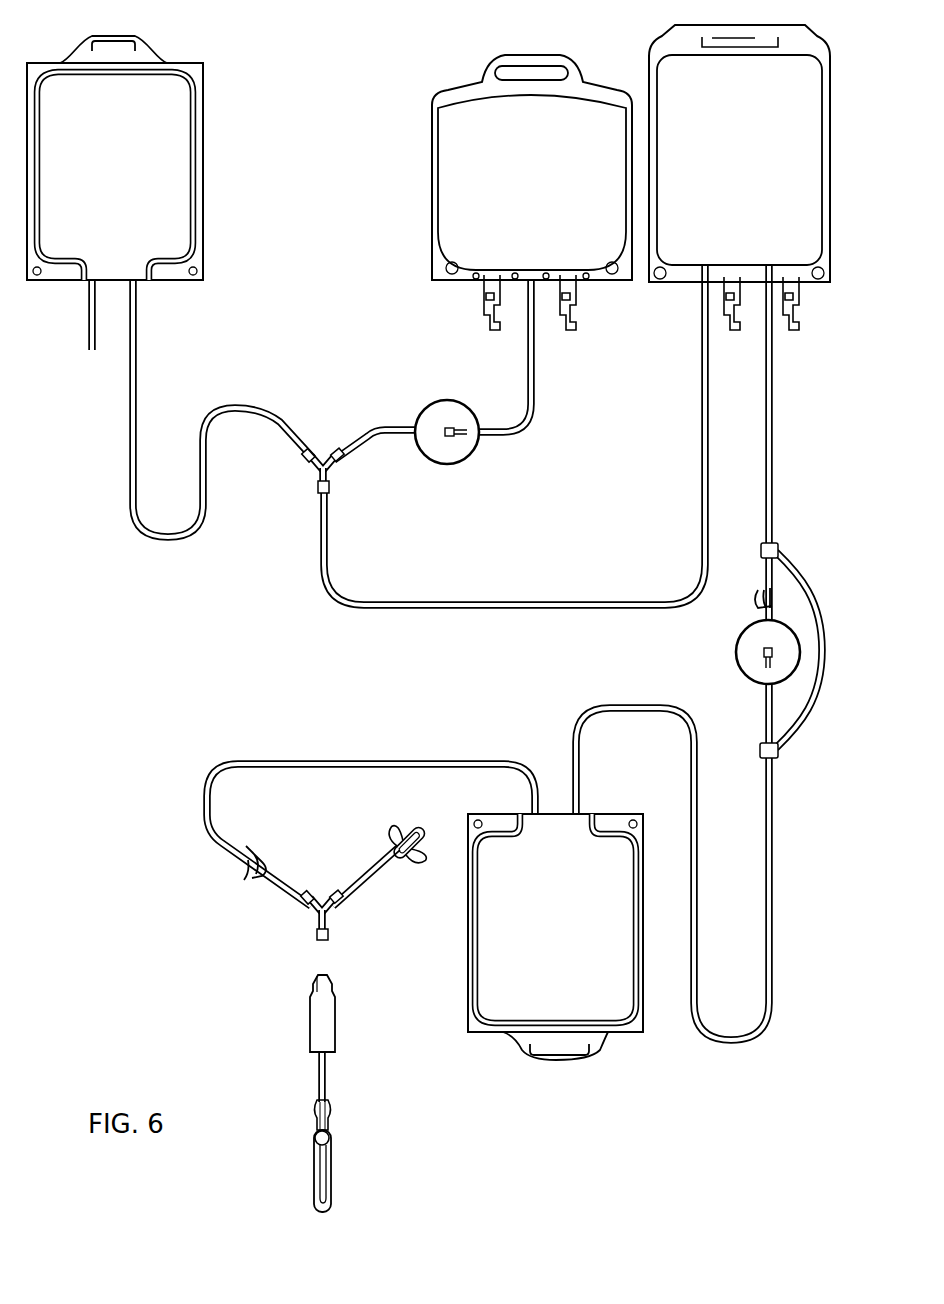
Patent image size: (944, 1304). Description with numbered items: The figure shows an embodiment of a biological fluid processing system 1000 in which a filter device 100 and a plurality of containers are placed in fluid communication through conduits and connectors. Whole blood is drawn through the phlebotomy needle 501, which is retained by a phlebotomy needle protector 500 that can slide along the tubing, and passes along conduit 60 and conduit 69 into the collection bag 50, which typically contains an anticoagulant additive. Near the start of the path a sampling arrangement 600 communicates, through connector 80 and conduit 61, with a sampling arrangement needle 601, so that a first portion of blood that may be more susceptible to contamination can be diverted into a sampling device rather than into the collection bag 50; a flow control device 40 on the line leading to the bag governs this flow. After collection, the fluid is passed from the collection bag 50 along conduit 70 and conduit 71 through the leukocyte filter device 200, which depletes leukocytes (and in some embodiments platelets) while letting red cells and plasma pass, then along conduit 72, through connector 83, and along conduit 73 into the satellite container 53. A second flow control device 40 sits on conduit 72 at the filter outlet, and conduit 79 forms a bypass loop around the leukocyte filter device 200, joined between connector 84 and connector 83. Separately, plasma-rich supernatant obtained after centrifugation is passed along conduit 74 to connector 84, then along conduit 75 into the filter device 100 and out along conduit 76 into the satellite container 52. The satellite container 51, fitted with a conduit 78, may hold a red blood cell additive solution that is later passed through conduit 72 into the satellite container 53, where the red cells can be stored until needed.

The flow control device 40 is at (250, 868).
The collection bag 50 is at (604, 1002).
The satellite container 51 is at (160, 250).
The satellite container 52 is at (476, 248).
The satellite container 53 is at (696, 250).
The conduit 60 is at (328, 1078).
The conduit 61 is at (365, 888).
The conduit 69 is at (210, 822).
The conduit 70 is at (580, 778).
The conduit 71 is at (766, 706).
The conduit 72 is at (130, 490).
The conduit 73 is at (775, 430).
The conduit 74 is at (706, 440).
The conduit 75 is at (378, 432).
The conduit 76 is at (535, 376).
The conduit 78 is at (90, 310).
The conduit 79 is at (814, 612).
The connector 80 is at (318, 915).
The connector 83 is at (761, 752).
The connector 84 is at (318, 468).
The filter device 100 is at (452, 452).
The leukocyte filter device 200 is at (750, 646).
The phlebotomy needle protector 500 is at (298, 1010).
The phlebotomy needle 501 is at (325, 1175).
The sampling arrangement 600 is at (398, 1034).
The sampling arrangement needle 601 is at (408, 836).
The biological fluid processing system 1000 is at (657, 1172).